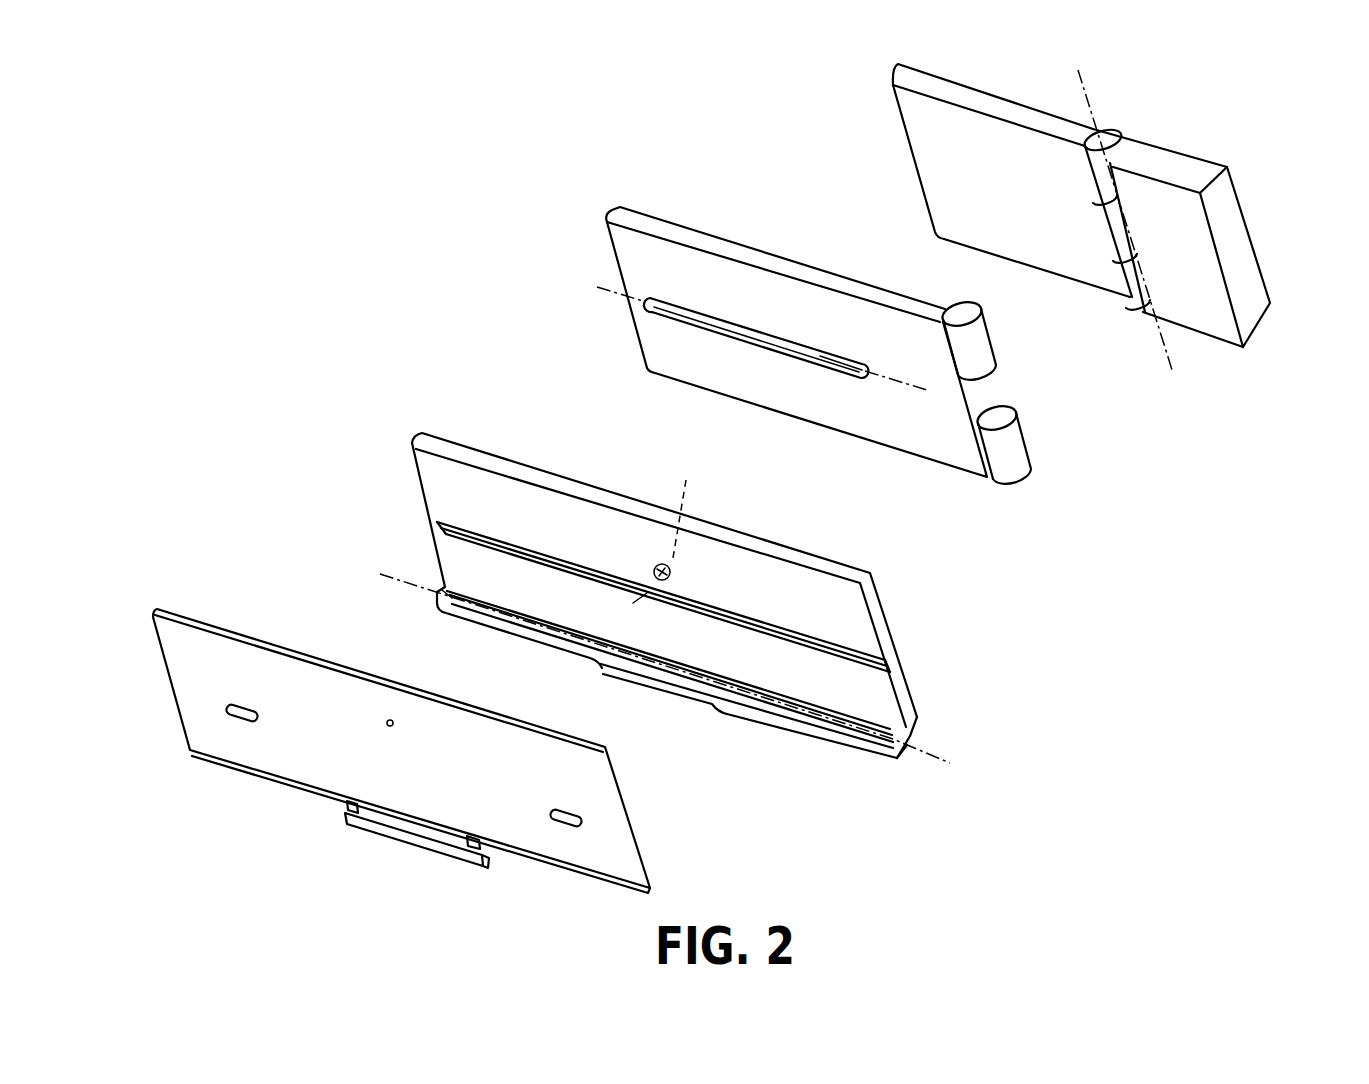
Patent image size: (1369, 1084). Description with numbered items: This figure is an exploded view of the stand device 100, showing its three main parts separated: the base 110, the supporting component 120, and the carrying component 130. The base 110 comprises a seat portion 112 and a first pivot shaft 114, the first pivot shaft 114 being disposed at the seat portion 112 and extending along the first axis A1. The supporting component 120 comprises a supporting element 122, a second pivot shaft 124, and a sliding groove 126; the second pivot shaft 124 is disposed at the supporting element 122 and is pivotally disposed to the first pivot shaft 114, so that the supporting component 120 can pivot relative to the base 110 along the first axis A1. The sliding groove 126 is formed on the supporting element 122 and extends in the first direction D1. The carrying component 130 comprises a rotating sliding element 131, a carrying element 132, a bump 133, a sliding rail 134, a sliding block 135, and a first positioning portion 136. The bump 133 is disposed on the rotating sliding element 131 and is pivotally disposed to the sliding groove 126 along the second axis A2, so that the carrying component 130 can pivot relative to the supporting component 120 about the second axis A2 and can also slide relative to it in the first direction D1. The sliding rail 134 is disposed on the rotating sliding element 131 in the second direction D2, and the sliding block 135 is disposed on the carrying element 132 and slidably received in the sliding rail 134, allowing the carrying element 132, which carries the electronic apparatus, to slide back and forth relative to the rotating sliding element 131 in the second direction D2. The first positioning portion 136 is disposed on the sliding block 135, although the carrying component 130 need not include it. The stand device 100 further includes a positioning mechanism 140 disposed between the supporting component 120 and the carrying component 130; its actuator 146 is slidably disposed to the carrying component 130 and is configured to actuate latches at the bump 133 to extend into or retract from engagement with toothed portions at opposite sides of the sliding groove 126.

The stand device 100 is at (247, 203).
The base 110 is at (829, 80).
The seat portion 112 is at (940, 162).
The first pivot shaft 114 is at (1117, 240).
The supporting component 120 is at (560, 226).
The supporting element 122 is at (763, 283).
The second pivot shaft 124 is at (1013, 440).
The sliding groove 126 is at (841, 373).
The carrying component 130 is at (227, 375).
The rotating sliding element 131 is at (379, 470).
The carrying element 132 is at (192, 591).
The bump 133 is at (655, 563).
The sliding rail 134 is at (460, 599).
The sliding block 135 is at (400, 835).
The first positioning portion 136 is at (345, 811).
The positioning mechanism 140 is at (754, 735).
The actuator 146 is at (693, 700).
The first axis A1 is at (1090, 103).
The second axis A2 is at (667, 519).
The first direction D1 is at (607, 290).
The second direction D2 is at (937, 748).